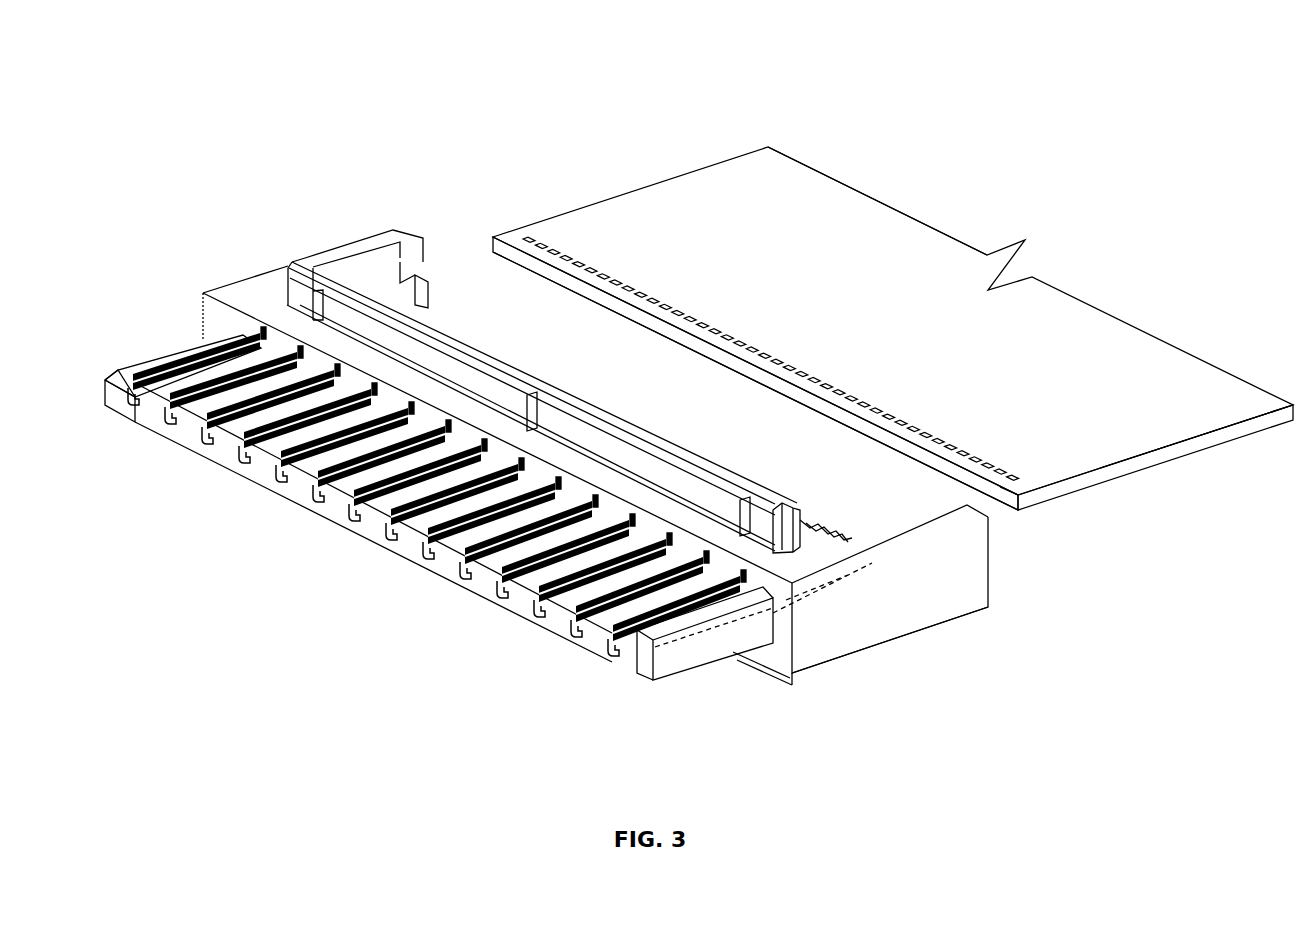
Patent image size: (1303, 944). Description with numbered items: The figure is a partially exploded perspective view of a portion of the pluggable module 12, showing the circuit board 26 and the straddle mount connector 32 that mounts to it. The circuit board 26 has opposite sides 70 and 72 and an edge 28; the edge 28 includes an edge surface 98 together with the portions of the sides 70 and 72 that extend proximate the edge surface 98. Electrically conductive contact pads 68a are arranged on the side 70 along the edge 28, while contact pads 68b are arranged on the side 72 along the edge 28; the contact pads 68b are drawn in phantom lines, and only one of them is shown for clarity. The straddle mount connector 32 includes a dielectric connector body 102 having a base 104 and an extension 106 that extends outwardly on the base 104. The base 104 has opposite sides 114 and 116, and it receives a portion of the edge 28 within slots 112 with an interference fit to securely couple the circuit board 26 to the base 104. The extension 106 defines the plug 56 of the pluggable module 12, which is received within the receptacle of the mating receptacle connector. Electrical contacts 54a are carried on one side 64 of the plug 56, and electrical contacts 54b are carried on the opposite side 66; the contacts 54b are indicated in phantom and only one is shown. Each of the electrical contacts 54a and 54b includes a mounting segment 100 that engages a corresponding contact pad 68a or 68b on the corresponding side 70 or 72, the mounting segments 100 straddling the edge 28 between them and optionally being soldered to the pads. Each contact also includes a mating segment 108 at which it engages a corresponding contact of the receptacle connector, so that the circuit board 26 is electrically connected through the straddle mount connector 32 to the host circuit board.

The pluggable module 12 is at (614, 85).
The side of the circuit board 70 is at (640, 186).
The edge of the circuit board 28 is at (508, 233).
The circuit board 26 is at (1060, 492).
The side of the circuit board 72 is at (1113, 474).
The edge surface 98 is at (762, 385).
The contact pads 68a is at (740, 338).
The contact pads 68b is at (992, 493).
The base 104 is at (250, 280).
The slots 112 is at (398, 288).
The side of the base 114 is at (880, 540).
The dielectric connector body 102 is at (932, 608).
The straddle mount connector 32 is at (895, 633).
The side of the base 116 is at (803, 676).
The mounting segments 100 is at (808, 520).
The plug 56 is at (414, 574).
The side of the plug 66 is at (255, 501).
The electrical contacts 54b is at (665, 649).
The side of the plug 64 is at (205, 347).
The extension 106 is at (143, 358).
The mating segments 108 is at (336, 489).
The electrical contacts 54a is at (227, 360).